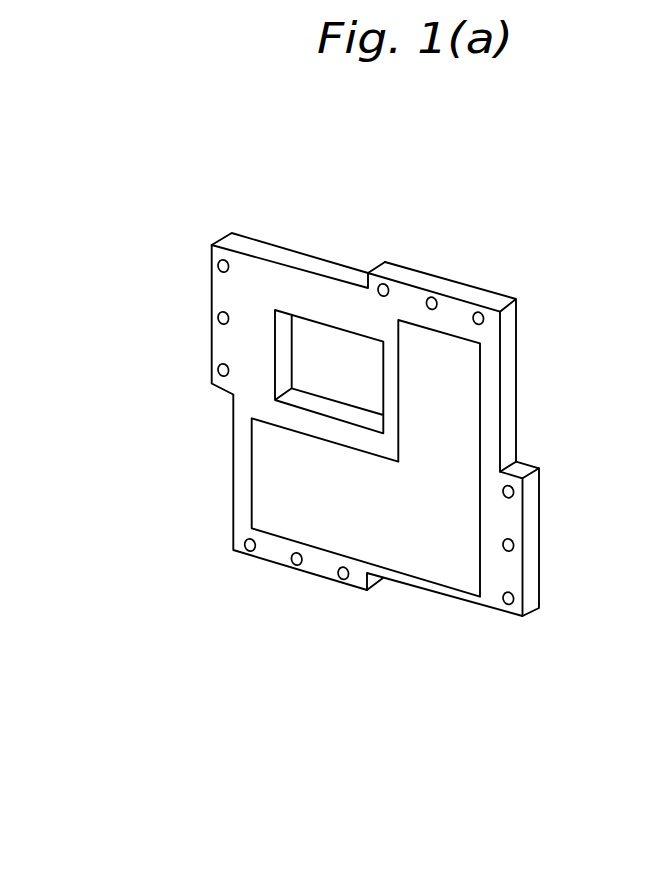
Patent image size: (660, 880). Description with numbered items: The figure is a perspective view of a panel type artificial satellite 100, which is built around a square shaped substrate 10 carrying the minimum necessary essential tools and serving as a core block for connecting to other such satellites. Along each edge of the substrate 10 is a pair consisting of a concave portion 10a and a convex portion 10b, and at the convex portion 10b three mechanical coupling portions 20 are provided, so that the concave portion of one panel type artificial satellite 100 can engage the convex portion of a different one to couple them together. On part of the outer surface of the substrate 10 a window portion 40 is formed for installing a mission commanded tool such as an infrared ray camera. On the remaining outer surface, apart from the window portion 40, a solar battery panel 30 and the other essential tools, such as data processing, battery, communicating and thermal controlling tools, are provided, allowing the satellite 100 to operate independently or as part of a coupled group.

The panel type artificial satellite 100 is at (559, 281).
The square shaped substrate 10 is at (250, 410).
The concave portion 10a is at (341, 276).
The convex portion 10b is at (453, 288).
The mechanical coupling portions 20 is at (230, 368).
The solar battery panel 30 is at (458, 558).
The window portion 40 is at (312, 330).